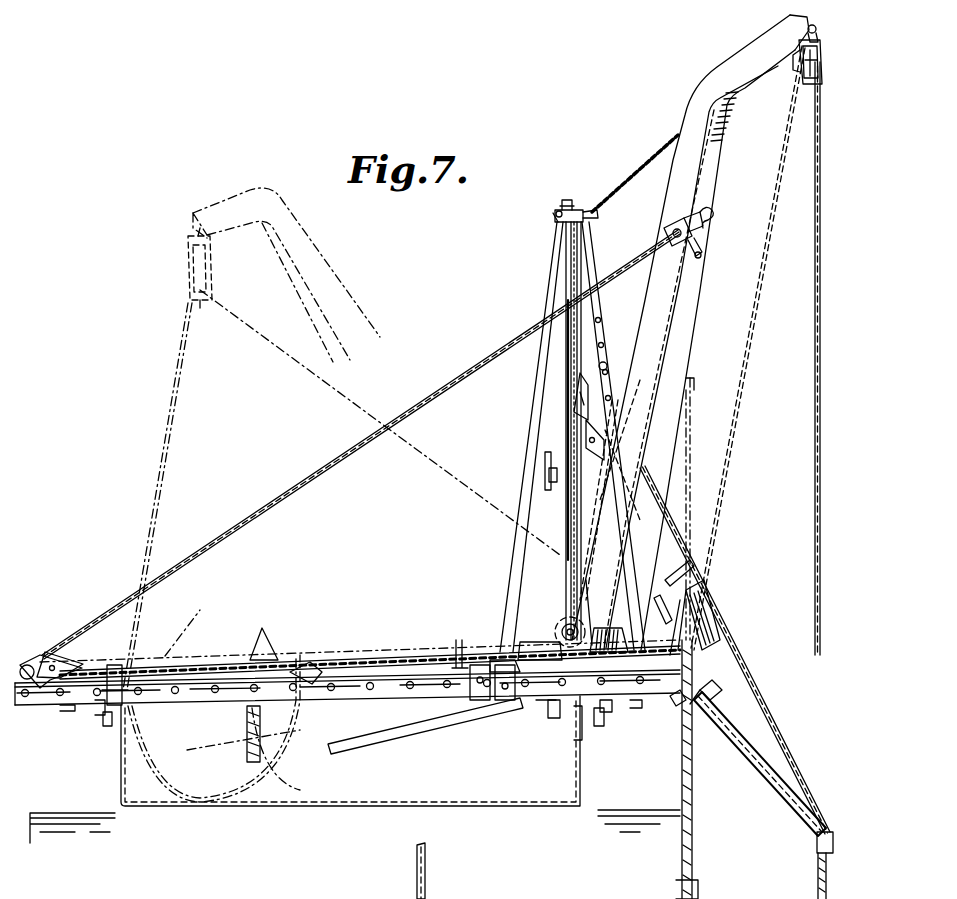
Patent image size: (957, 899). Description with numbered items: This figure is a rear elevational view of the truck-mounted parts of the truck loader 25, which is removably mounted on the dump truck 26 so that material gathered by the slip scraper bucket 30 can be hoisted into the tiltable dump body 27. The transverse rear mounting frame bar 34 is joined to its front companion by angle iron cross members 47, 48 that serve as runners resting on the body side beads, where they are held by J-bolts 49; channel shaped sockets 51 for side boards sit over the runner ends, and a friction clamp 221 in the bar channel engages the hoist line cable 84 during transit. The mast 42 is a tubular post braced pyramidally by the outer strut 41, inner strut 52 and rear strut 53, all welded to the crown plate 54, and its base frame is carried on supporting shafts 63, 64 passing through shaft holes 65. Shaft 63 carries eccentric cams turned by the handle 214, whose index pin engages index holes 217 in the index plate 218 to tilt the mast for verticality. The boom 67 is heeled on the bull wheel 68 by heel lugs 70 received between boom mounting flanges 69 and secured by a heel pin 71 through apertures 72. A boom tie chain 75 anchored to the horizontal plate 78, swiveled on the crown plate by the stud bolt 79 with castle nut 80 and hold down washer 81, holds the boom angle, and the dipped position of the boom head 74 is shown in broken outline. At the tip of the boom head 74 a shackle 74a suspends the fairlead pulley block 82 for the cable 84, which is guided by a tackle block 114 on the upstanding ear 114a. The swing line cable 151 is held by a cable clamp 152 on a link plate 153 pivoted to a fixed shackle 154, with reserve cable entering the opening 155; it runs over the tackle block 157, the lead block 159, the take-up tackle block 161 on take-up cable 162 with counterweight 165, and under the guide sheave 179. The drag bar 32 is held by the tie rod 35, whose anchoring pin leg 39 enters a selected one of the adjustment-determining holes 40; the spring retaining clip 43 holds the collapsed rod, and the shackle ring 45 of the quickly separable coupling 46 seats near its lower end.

The boom head 74 is at (738, 63).
The shackle 74a is at (816, 30).
The fairlead pulley block 82 is at (823, 68).
The hoist line cable 84 is at (814, 322).
The boom tie chain 75 is at (654, 153).
The outer strut 41 is at (602, 262).
The crown plate 54 is at (554, 221).
The stud bolt 79 is at (567, 199).
The horizontal plate 78 is at (588, 210).
The castle nut 80 is at (556, 210).
The hold down washer 81 is at (553, 217).
The inner strut 52 is at (519, 492).
The mast 42 is at (562, 520).
The rear strut 53 is at (556, 543).
The adjustment-determining holes 40 is at (605, 325).
The anchoring pin leg 39 is at (607, 366).
The take-up cable 162 is at (586, 376).
The tackle block 161 is at (590, 438).
The counterweight 165 is at (548, 468).
The boom 67 is at (697, 314).
The heel lugs 70 is at (566, 624).
The boom mounting flanges 69 is at (564, 652).
The guide sheave 179 is at (563, 627).
The heel pin 71 is at (601, 604).
The apertures 72 is at (530, 645).
The lead block 159 is at (665, 600).
The tackle block 114 is at (702, 625).
The swing line cable 151 is at (709, 557).
The truck loader 25 is at (698, 387).
The tie rod 35 is at (698, 436).
The drag bar 32 is at (742, 772).
The spring retaining clip 43 is at (713, 708).
The shackle ring 45 is at (831, 830).
The quickly separable coupling 46 is at (816, 848).
The rear mounting frame bar 34 is at (437, 704).
The shaft holes 65 is at (404, 686).
The tackle block 157 is at (49, 658).
The cross member 47 is at (128, 726).
The channel shaped sockets 51 is at (111, 686).
The friction clamp 221 is at (63, 710).
The J-bolts 49 is at (105, 728).
The dump body 27 is at (120, 764).
The dump truck 26 is at (491, 790).
The slip scraper bucket 30 is at (361, 775).
The handle 214 is at (481, 702).
The supporting shaft 63 is at (491, 702).
The index plate 218 is at (503, 702).
The index holes 217 is at (466, 650).
The cross member 48 is at (576, 742).
The bull wheel 68 is at (606, 714).
The supporting shaft 64 is at (638, 702).
The upstanding ear 114a is at (675, 705).
The cable clamp 152 is at (667, 230).
The link plate 153 is at (685, 222).
The fixed shackle 154 is at (709, 208).
The opening 155 is at (704, 258).